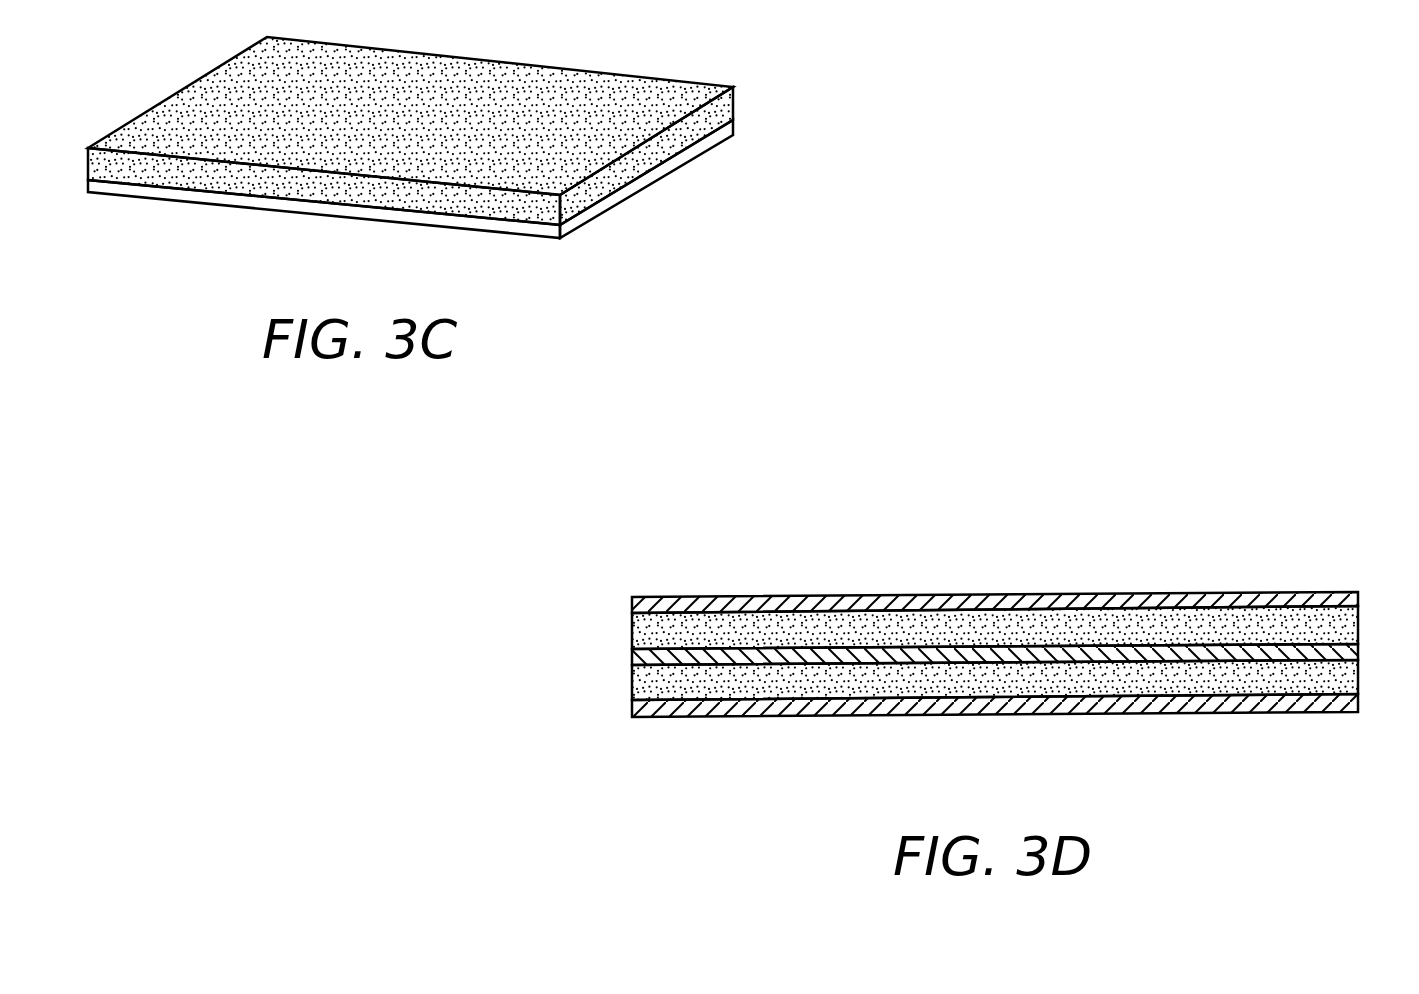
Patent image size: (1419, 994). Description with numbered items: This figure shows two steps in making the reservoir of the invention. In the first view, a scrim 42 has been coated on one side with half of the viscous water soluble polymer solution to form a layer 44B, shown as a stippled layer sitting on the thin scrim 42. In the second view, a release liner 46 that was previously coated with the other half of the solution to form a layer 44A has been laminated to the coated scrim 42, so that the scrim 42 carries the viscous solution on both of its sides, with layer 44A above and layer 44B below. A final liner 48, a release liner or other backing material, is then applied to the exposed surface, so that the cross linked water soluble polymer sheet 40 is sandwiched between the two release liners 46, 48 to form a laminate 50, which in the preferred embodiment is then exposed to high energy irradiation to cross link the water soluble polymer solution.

In FIG. 3D, the cross linked water soluble polymer sheet 40 is at (900, 663).
In FIG. 3C, the scrim 42 is at (188, 195).
In FIG. 3D, the scrim 42 is at (712, 658).
In FIG. 3D, the layer 44A is at (1173, 623).
In FIG. 3C, the layer 44B is at (340, 183).
In FIG. 3D, the layer 44B is at (988, 676).
In FIG. 3D, the release liner 46 is at (732, 603).
In FIG. 3D, the final liner 48 is at (1217, 705).
In FIG. 3D, the laminate 50 is at (976, 553).